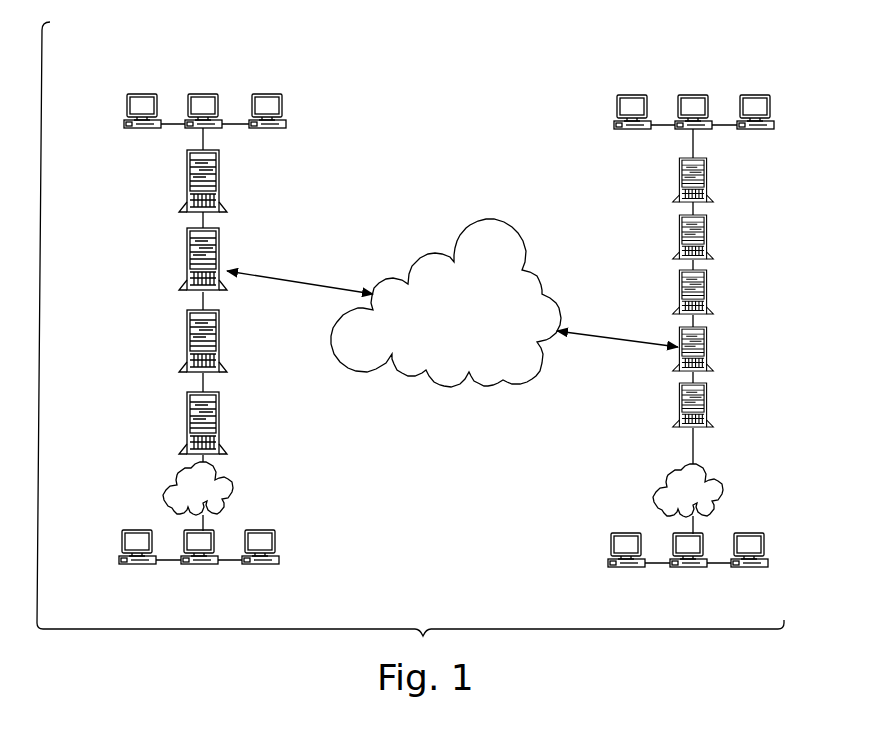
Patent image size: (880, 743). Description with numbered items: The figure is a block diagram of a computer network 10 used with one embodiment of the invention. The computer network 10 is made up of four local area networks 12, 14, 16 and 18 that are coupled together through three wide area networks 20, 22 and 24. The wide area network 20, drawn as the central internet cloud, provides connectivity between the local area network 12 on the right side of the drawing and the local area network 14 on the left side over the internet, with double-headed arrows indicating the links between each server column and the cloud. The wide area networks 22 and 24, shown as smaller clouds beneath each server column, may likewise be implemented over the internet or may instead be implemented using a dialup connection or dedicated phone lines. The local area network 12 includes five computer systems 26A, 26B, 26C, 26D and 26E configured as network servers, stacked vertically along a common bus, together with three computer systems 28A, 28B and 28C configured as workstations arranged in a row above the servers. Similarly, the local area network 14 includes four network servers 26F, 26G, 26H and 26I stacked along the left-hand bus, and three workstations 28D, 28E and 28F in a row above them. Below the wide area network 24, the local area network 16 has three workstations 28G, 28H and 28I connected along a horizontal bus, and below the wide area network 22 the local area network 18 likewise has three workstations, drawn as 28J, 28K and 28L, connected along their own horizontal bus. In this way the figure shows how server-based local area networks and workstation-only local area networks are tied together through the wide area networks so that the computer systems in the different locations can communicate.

The computer network 10 is at (685, 35).
The local area network 12 is at (646, 247).
The local area network 14 is at (137, 247).
The local area network 16 is at (96, 525).
The local area network 18 is at (592, 529).
The wide area network 20 is at (453, 374).
The wide area network 22 is at (723, 500).
The wide area network 24 is at (233, 498).
The computer system configured as network server 26A is at (709, 179).
The computer system configured as network server 26B is at (709, 239).
The computer system configured as network server 26C is at (709, 296).
The computer system configured as network server 26D is at (709, 353).
The computer system configured as network server 26E is at (709, 408).
The network server 26F is at (221, 178).
The network server 26G is at (221, 259).
The network server 26H is at (221, 341).
The network server 26I is at (221, 418).
The computer system configured as workstation 28A is at (629, 95).
The computer system configured as workstation 28B is at (690, 95).
The computer system configured as workstation 28C is at (752, 95).
The workstation 28D is at (139, 93).
The workstation 28E is at (200, 93).
The workstation 28F is at (264, 93).
The workstation 28G is at (131, 565).
The workstation 28H is at (193, 565).
The workstation 28I is at (254, 565).
The workstation 28J is at (620, 568).
The workstation 28K is at (682, 568).
The workstation 28L is at (743, 568).